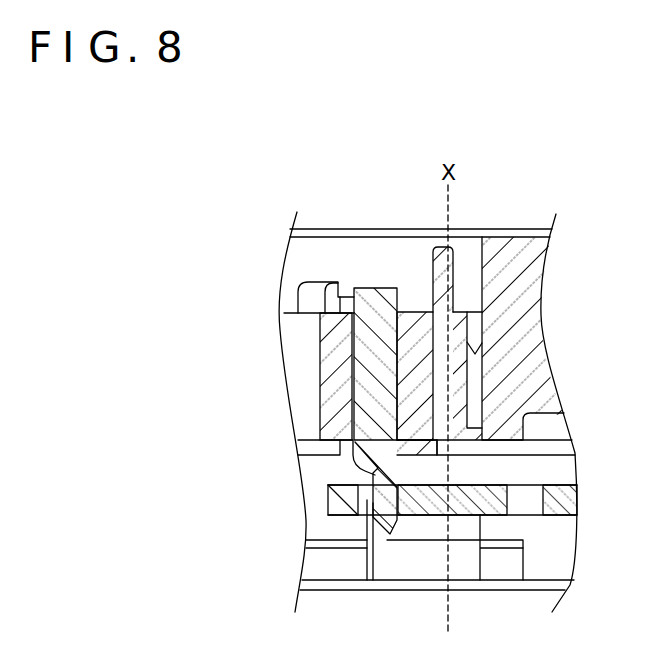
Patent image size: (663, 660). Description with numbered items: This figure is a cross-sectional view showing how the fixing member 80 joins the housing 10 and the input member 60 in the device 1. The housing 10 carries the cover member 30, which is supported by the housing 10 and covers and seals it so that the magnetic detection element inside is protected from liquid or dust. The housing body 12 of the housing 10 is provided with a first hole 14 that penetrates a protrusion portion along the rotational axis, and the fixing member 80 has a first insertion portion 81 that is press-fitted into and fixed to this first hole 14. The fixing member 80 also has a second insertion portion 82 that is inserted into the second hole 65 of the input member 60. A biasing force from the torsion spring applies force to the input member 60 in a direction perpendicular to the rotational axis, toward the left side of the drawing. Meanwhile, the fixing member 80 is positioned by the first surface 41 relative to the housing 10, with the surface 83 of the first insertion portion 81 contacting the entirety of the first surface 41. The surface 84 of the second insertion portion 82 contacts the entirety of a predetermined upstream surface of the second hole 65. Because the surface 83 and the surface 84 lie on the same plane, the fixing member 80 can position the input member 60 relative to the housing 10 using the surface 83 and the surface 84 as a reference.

The sensor device 1 is at (527, 206).
The housing 10 is at (297, 388).
The housing body 12 is at (530, 325).
The first hole 14 is at (317, 320).
The cover member 30 is at (325, 232).
The first surface 41 is at (398, 318).
The input member 60 is at (468, 518).
The second hole 65 is at (370, 476).
The fixing member 80 is at (363, 437).
The first insertion portion 81 is at (365, 289).
The second insertion portion 82 is at (387, 535).
The surface 83 is at (413, 335).
The surface 84 is at (398, 474).